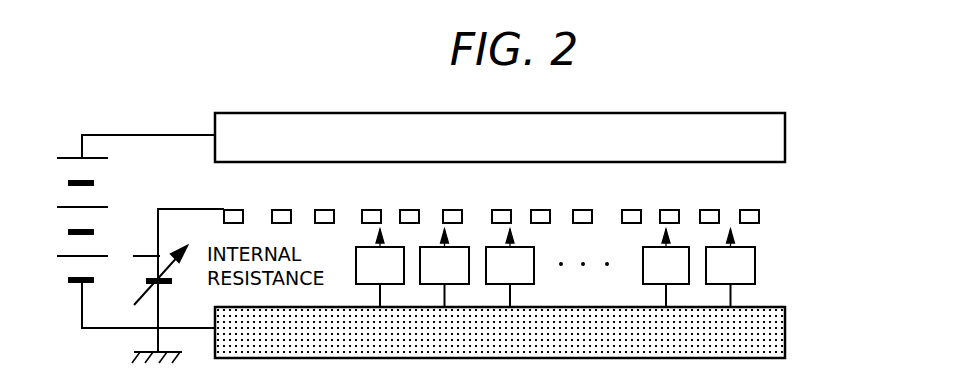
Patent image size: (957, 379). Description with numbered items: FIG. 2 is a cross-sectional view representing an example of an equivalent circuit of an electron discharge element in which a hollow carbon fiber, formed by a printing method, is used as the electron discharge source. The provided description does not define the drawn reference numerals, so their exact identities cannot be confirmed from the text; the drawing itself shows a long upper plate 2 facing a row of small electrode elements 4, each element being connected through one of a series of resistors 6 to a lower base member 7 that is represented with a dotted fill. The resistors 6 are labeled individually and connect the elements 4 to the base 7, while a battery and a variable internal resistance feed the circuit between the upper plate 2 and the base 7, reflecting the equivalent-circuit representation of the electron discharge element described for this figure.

The upper electrode plate 2 is at (740, 139).
The detection electrodes 4 is at (755, 215).
The resistors 6 is at (755, 266).
The base member 7 is at (783, 327).